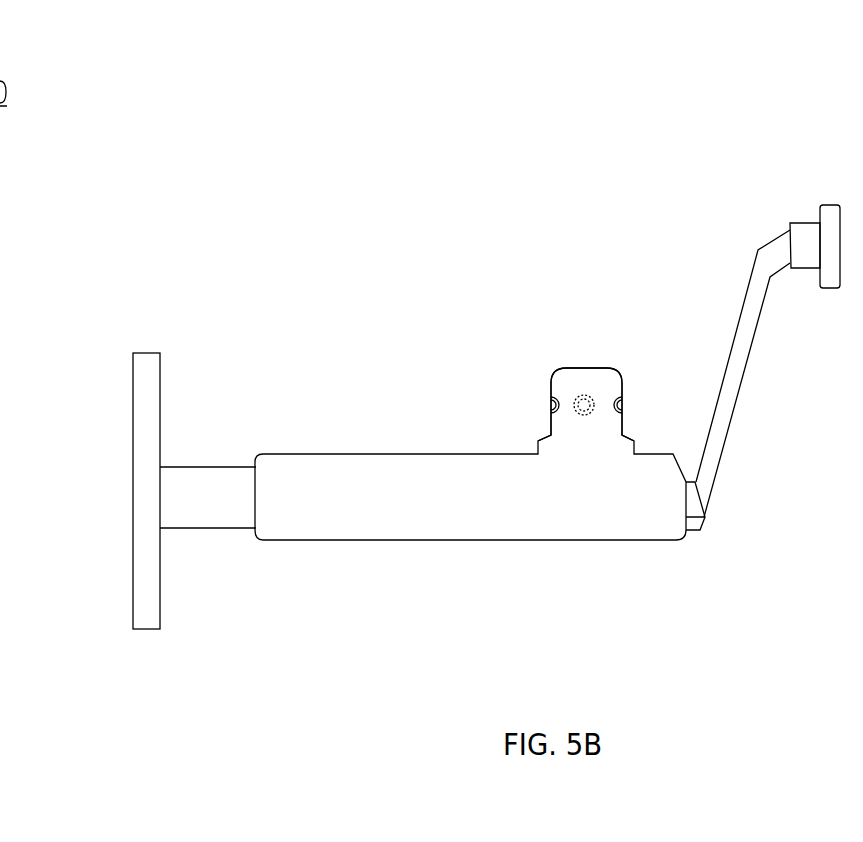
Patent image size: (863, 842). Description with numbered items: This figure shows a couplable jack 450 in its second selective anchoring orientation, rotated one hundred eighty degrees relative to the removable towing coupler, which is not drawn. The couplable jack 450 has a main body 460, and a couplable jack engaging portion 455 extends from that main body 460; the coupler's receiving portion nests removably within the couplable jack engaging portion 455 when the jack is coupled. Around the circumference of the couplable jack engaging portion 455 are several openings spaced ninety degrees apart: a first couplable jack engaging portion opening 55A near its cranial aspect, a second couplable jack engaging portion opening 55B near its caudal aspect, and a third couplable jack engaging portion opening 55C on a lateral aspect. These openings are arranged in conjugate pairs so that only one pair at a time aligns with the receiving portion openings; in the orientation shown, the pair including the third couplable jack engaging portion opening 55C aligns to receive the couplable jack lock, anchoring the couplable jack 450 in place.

The couplable jack 450 is at (735, 178).
The couplable jack engaging portion 455 is at (503, 441).
The main body 460 is at (685, 573).
The first couplable jack engaging portion opening 55A is at (631, 401).
The second couplable jack engaging portion opening 55B is at (537, 401).
The third couplable jack engaging portion opening 55C is at (583, 383).